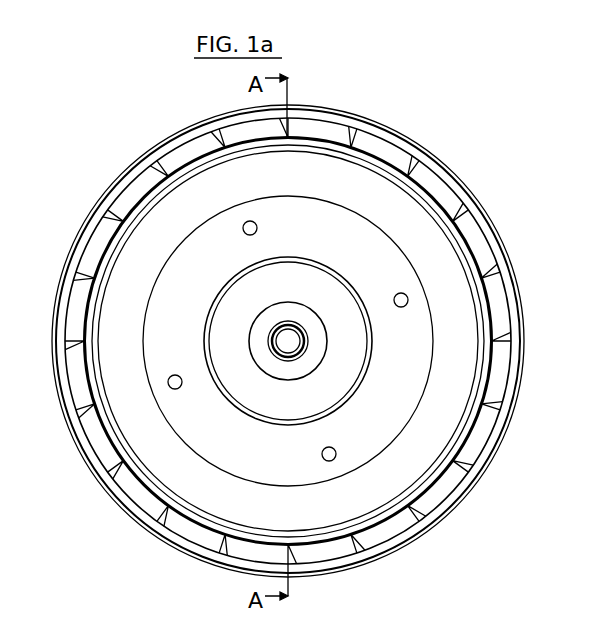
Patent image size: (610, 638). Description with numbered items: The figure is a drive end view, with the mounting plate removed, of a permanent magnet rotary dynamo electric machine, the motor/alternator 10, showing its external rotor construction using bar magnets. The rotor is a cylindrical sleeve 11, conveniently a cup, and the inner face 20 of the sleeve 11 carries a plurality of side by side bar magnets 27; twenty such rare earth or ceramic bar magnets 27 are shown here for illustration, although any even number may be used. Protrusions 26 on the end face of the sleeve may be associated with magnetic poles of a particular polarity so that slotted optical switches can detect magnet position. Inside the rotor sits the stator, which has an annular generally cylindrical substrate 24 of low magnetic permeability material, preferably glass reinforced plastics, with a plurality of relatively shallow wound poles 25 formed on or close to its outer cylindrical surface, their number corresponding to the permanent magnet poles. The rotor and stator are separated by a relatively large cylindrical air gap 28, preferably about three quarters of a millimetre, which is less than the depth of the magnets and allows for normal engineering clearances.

The motor/alternator 10 is at (513, 181).
The cylindrical sleeve 11 is at (503, 255).
The inner face of the sleeve 20 is at (446, 245).
The substrate 24 is at (498, 382).
The wound poles 25 is at (478, 300).
The protrusions 26 is at (494, 448).
The bar magnets 27 is at (340, 132).
The cylindrical air gap 28 is at (407, 500).